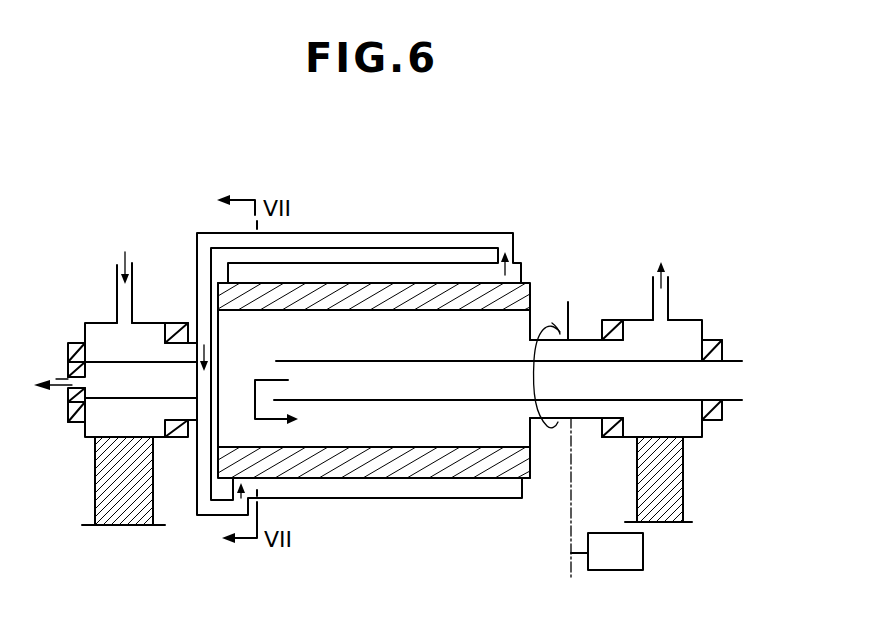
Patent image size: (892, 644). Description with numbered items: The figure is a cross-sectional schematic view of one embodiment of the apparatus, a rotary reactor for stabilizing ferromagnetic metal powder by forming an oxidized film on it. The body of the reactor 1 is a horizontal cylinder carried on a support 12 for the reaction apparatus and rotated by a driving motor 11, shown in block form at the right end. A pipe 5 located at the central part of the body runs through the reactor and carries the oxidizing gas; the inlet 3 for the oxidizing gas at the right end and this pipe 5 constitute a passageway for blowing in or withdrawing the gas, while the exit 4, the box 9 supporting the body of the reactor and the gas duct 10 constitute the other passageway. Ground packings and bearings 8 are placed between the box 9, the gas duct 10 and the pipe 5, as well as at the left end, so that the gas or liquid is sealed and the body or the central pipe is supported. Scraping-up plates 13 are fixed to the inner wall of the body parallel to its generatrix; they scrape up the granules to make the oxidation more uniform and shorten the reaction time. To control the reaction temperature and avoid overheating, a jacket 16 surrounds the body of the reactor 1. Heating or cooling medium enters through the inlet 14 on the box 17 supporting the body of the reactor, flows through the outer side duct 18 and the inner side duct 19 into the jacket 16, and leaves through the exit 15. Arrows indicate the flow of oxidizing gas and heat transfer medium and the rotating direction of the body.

The body of a reactor 1 is at (522, 300).
The inlet for oxidizing gas 3 is at (742, 358).
The exit for oxidizing gas 4 is at (668, 283).
The pipe 5 is at (402, 400).
The ground packing and bearing 8 is at (172, 322).
The box supporting the body of the reactor 9 is at (690, 320).
The gas duct 10 is at (578, 337).
The driving motor 11 is at (645, 553).
The support for the reaction apparatus 12 is at (105, 497).
The scraping-up plate 13 is at (350, 300).
The inlet for heating or cooling medium 14 is at (134, 268).
The exit for heating or cooling medium 15 is at (62, 390).
The jacket 16 is at (372, 498).
The box supporting the body of the reactor 17 is at (143, 322).
The outer side duct for heating or cooling medium 18 is at (198, 328).
The inner side duct for heating or cooling medium 19 is at (146, 363).